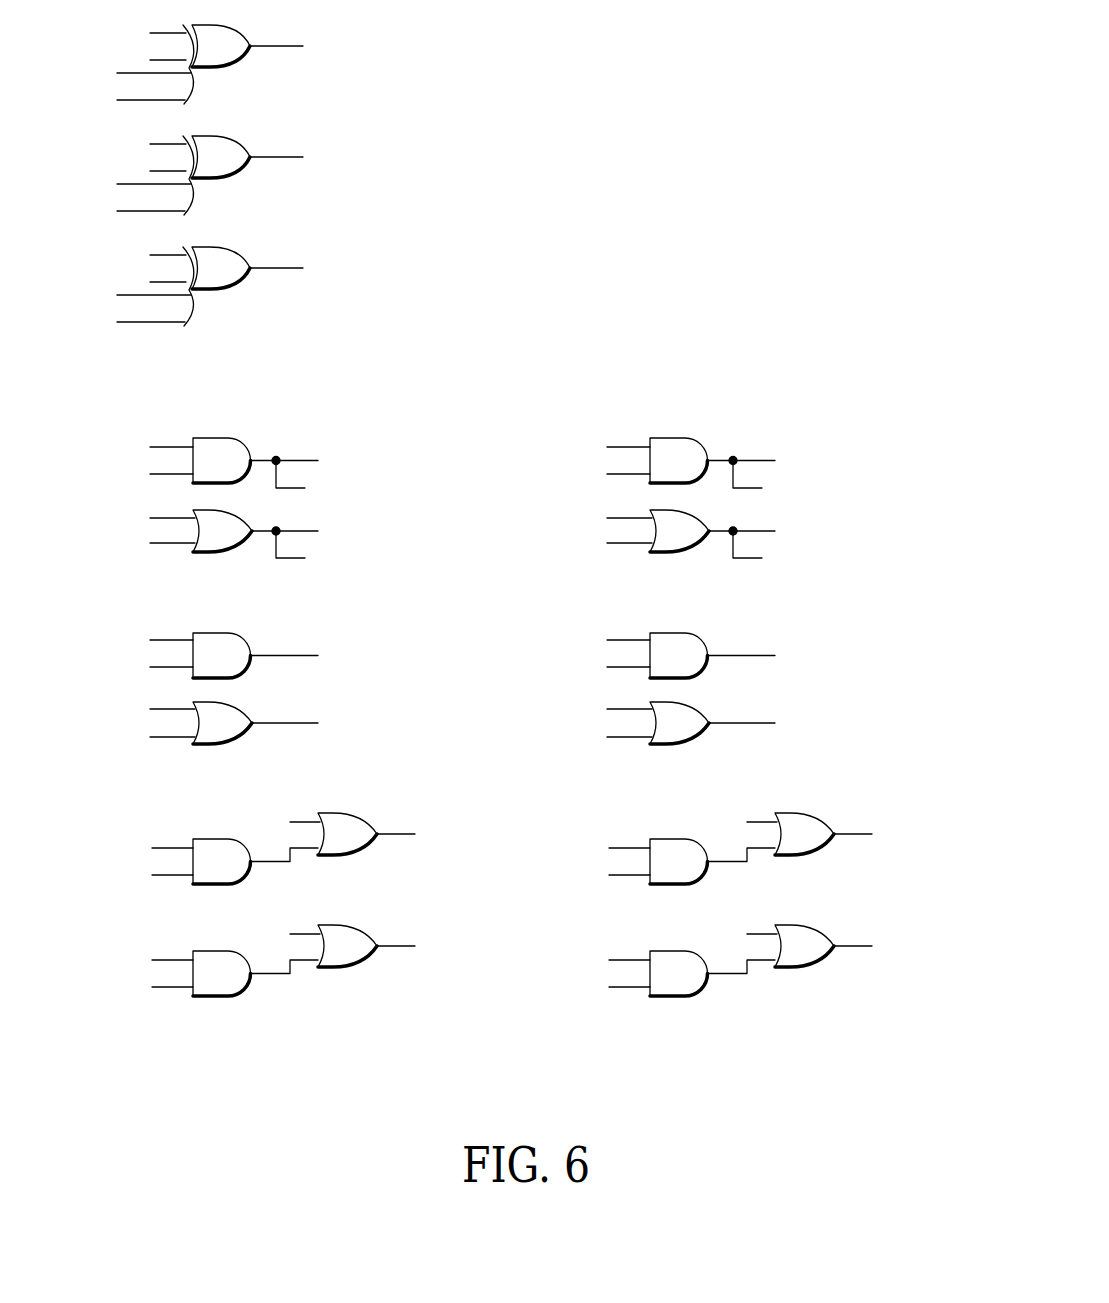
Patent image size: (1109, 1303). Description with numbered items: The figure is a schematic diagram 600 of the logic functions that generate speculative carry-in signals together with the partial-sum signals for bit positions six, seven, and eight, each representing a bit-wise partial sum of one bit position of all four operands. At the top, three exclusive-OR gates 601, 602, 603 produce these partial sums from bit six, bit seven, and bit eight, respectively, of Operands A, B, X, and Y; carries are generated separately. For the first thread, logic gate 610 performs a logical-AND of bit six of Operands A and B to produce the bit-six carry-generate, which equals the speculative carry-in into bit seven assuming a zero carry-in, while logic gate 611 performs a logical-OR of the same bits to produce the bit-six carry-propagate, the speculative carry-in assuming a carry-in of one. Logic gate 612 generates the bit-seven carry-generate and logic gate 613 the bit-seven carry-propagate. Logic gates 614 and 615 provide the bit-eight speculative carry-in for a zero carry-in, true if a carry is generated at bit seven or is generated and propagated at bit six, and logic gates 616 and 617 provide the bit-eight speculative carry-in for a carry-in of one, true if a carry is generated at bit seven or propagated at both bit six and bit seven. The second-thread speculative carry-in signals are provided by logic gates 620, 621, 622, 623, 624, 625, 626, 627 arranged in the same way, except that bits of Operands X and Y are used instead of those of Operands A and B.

The schematic diagram 600 is at (542, 1110).
The exclusive-OR gate 601 is at (237, 65).
The exclusive-OR gate 602 is at (237, 176).
The exclusive-OR gate 603 is at (237, 287).
The logic gate 610 is at (210, 438).
The logic gate 611 is at (220, 553).
The logic gate 612 is at (245, 676).
The logic gate 613 is at (236, 745).
The logic gate 614 is at (243, 882).
The logic gate 615 is at (358, 856).
The logic gate 616 is at (243, 994).
The logic gate 617 is at (358, 968).
The logic gate 620 is at (680, 420).
The logic gate 621 is at (677, 553).
The logic gate 622 is at (702, 676).
The logic gate 623 is at (693, 745).
The logic gate 624 is at (700, 882).
The logic gate 625 is at (815, 856).
The logic gate 626 is at (700, 994).
The logic gate 627 is at (815, 968).